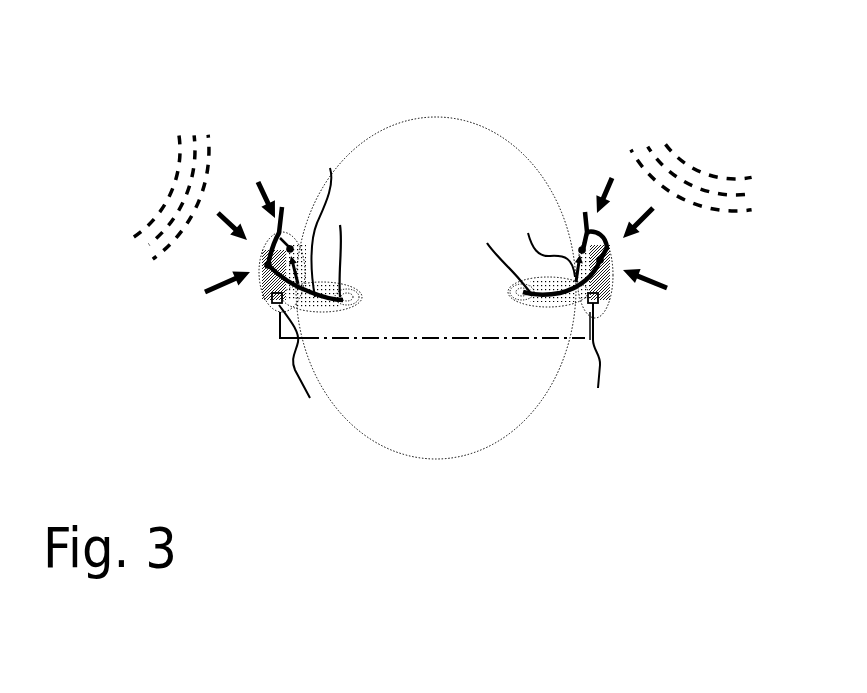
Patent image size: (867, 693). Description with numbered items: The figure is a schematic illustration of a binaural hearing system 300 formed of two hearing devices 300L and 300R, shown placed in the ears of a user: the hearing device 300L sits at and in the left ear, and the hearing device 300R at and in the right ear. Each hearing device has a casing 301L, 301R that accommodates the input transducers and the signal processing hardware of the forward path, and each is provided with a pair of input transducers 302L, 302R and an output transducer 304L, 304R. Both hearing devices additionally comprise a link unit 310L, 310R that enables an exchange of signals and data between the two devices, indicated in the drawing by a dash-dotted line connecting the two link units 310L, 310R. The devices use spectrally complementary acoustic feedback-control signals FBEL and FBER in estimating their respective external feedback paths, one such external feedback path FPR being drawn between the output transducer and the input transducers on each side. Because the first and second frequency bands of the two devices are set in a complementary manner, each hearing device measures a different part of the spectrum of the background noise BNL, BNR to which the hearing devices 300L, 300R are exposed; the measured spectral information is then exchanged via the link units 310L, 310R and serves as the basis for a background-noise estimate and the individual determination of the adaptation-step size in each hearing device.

The binaural hearing system 300 is at (435, 233).
The left hearing device 300L is at (255, 310).
The right hearing device 300R is at (610, 325).
The casing of left hearing device 301L is at (258, 290).
The casing of right hearing device 301R is at (607, 280).
The input transducers of left hearing device 302L is at (282, 207).
The input transducers of right hearing device 302R is at (585, 212).
The output transducer of left hearing device 304L is at (366, 244).
The output transducer of right hearing device 304R is at (481, 255).
The link unit of left hearing device 310L is at (311, 369).
The link unit of right hearing device 310R is at (596, 363).
The background noise at left hearing device BNL is at (173, 190).
The background noise at right hearing device BNR is at (710, 173).
The external feedback path FPR is at (443, 215).
The acoustic feedback-control signal of left hearing device FBEL is at (350, 301).
The acoustic feedback-control signal of right hearing device FBER is at (518, 295).